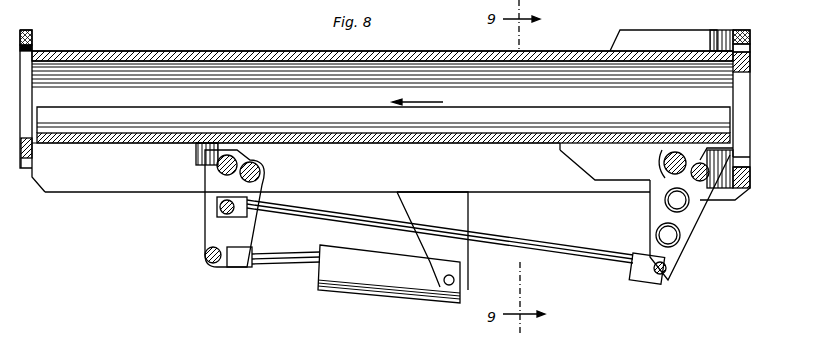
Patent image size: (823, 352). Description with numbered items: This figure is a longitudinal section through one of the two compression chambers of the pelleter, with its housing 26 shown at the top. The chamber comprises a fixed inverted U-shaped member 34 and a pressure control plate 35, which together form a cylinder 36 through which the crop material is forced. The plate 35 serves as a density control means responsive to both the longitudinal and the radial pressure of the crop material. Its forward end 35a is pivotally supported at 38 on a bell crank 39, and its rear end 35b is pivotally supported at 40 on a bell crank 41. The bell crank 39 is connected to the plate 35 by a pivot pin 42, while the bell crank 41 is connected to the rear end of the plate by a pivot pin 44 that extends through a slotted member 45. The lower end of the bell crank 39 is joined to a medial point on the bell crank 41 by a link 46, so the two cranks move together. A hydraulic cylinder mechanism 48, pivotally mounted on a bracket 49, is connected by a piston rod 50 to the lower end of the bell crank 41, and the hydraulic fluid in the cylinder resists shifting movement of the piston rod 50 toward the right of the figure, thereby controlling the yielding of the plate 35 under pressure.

The housing wall 26 is at (100, 51).
The inverted U-shaped member 34 is at (280, 51).
The cylinder 36 is at (200, 70).
The pressure control plate 35 is at (422, 143).
The forward end of plate 35a is at (682, 133).
The rear end of plate 35b is at (104, 133).
The slotted member 45 is at (190, 150).
The pivot pin 44 is at (218, 168).
The pivot support 40 is at (262, 170).
The bell crank 41 is at (212, 222).
The piston rod 50 is at (277, 268).
The hydraulic cylinder mechanism 48 is at (372, 292).
The bracket 49 is at (462, 220).
The link 46 is at (560, 250).
The bell crank 39 is at (690, 226).
The pivot pin 42 is at (660, 163).
The pivot support 38 is at (705, 182).